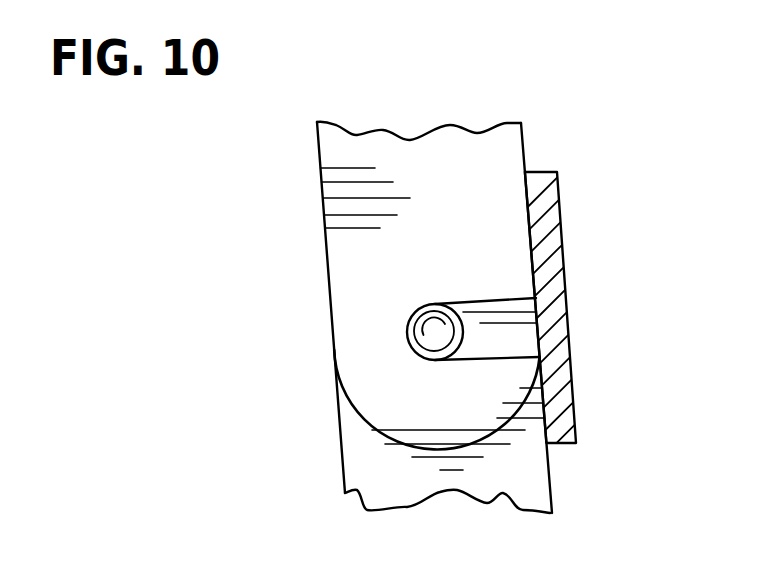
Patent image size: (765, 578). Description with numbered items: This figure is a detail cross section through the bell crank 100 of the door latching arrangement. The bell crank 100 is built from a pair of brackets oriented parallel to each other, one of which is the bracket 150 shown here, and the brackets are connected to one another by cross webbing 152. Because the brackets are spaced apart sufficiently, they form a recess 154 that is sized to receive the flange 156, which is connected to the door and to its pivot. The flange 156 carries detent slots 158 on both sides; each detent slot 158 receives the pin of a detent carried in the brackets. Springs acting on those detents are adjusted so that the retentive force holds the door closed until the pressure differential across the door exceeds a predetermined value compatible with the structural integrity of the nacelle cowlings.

The bell crank 100 is at (308, 276).
The bracket 150 is at (358, 492).
The cross webbing 152 is at (533, 201).
The recess 154 is at (352, 428).
The flange 156 is at (331, 148).
The detent slot 158 is at (495, 350).